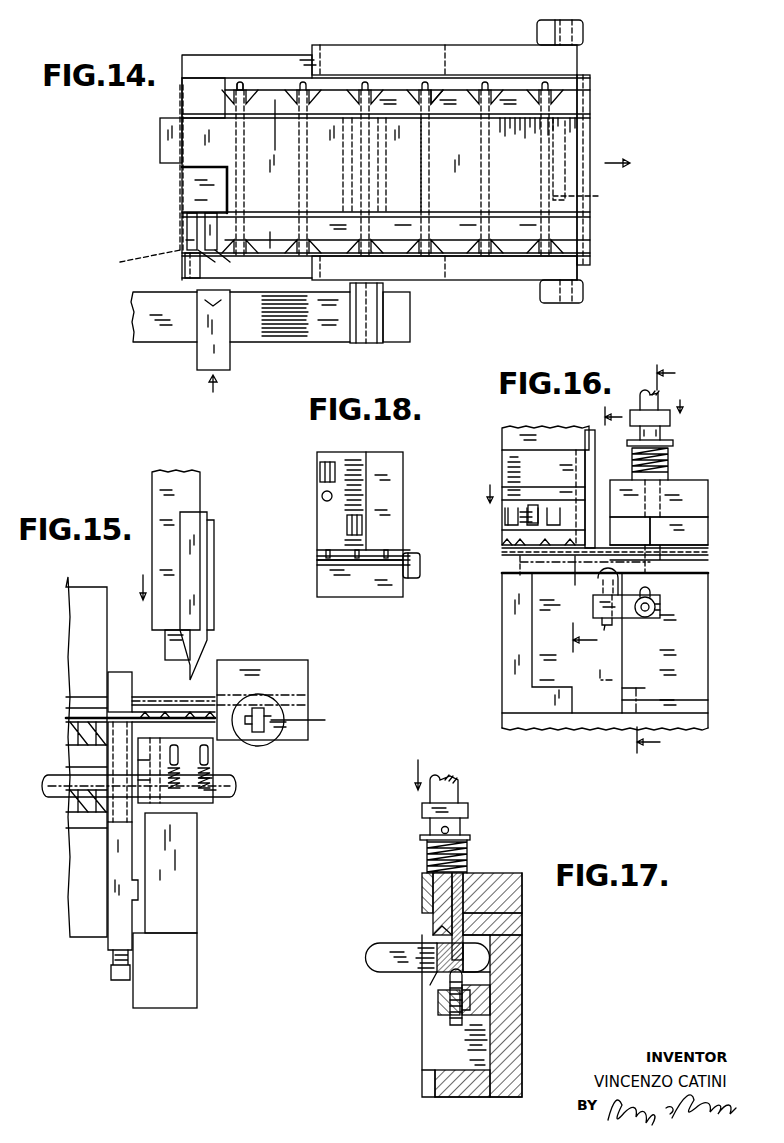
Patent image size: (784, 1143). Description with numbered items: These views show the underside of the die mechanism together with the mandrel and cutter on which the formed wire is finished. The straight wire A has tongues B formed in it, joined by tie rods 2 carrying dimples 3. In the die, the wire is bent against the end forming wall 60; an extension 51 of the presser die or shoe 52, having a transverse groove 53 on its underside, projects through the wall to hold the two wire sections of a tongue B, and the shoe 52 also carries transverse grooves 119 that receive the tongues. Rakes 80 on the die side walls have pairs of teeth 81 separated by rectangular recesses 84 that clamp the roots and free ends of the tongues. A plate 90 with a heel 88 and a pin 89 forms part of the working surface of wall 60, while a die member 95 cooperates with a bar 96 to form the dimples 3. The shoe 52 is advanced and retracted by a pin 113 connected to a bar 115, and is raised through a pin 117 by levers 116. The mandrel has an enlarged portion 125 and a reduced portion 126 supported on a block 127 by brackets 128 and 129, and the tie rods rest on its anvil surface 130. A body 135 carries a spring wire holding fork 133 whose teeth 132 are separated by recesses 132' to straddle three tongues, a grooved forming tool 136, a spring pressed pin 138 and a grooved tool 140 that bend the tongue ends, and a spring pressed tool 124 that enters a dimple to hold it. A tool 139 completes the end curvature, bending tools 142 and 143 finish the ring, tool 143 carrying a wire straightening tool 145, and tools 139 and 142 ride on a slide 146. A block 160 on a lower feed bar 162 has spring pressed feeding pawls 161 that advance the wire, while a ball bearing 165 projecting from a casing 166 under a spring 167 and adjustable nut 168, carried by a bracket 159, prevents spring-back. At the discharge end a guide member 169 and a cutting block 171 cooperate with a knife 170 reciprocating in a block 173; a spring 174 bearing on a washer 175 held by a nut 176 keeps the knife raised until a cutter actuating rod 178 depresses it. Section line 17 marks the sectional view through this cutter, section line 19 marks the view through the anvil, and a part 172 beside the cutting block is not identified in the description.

In FIG. 14, the tie-rods 2 is at (512, 260).
In FIG. 14, the dimples 3 is at (276, 260).
In FIG. 15, the dimples 3 is at (130, 712).
In FIG. 16, the section line 17— 17 is at (657, 559).
In FIG. 16, the section line 19— 19 is at (586, 529).
In FIG. 14, the extension of presser die 51 is at (162, 164).
In FIG. 14, the presser die or shoe 52 is at (276, 183).
In FIG. 14, the transverse groove 53 is at (170, 143).
In FIG. 14, the end forming wall 60 is at (196, 191).
In FIG. 14, the rakes 80 is at (271, 174).
In FIG. 14, the teeth 81 is at (470, 104).
In FIG. 14, the recess 84 is at (243, 92).
In FIG. 14, the heel portion 88 is at (186, 216).
In FIG. 14, the pin 89 is at (183, 243).
In FIG. 14, the plate 90 is at (182, 267).
In FIG. 14, the die member 95 is at (218, 262).
In FIG. 14, the bar 96 is at (198, 361).
In FIG. 14, the pin 113 is at (366, 343).
In FIG. 14, the bar 115 is at (136, 321).
In FIG. 14, the levers 116 is at (490, 45).
In FIG. 14, the pin 117 is at (372, 60).
In FIG. 14, the transverse grooves 119 is at (486, 174).
In FIG. 18, the spring pressed tool 124 is at (410, 554).
In FIG. 16, the spring pressed tool 124 is at (590, 459).
In FIG. 16, the enlarged portion of mandrel 125 is at (502, 578).
In FIG. 17, the enlarged portion of mandrel 125 is at (370, 955).
In FIG. 15, the enlarged portion of mandrel 125 is at (110, 757).
In FIG. 16, the reduced portion of mandrel 126 is at (555, 576).
In FIG. 15, the reduced portion of mandrel 126 is at (162, 697).
In FIG. 16, the block 127 is at (505, 720).
In FIG. 16, the bracket 128 is at (505, 645).
In FIG. 16, the bracket 129 is at (708, 661).
In FIG. 17, the bracket 129 is at (522, 995).
In FIG. 16, the anvil surface 130 is at (540, 562).
In FIG. 18, the teeth 132 is at (345, 563).
In FIG. 16, the teeth 132 is at (581, 565).
In FIG. 18, the recesses 132' is at (389, 570).
In FIG. 16, the recesses 132' is at (564, 503).
In FIG. 18, the spring wire holding fork 133 is at (367, 572).
In FIG. 16, the spring wire holding fork 133 is at (522, 568).
In FIG. 18, the body 135 is at (307, 548).
In FIG. 16, the body 135 is at (493, 466).
In FIG. 18, the grooved forming tool 136 is at (320, 474).
In FIG. 16, the grooved forming tool 136 is at (502, 538).
In FIG. 18, the spring pressed pin 138 is at (322, 496).
In FIG. 16, the spring pressed pin 138 is at (502, 525).
In FIG. 15, the tool 139 is at (113, 850).
In FIG. 18, the grooved tool 140 is at (360, 528).
In FIG. 16, the grooved tool 140 is at (540, 505).
In FIG. 15, the bending tool 142 is at (197, 901).
In FIG. 15, the bending tool 143 is at (165, 645).
In FIG. 15, the wire straightening tool 145 is at (202, 611).
In FIG. 15, the slide 146 is at (197, 971).
In FIG. 16, the bracket 159 is at (630, 612).
In FIG. 17, the bracket 159 is at (490, 1010).
In FIG. 15, the block 160 is at (212, 803).
In FIG. 15, the feeding pawls 161 is at (175, 740).
In FIG. 15, the lower feed bar 162 is at (232, 790).
In FIG. 17, the ball bearing 165 is at (440, 998).
In FIG. 16, the casing 166 is at (600, 598).
In FIG. 17, the casing 166 is at (450, 1008).
In FIG. 17, the spring 167 is at (478, 982).
In FIG. 16, the adjustable nut 168 is at (604, 630).
In FIG. 17, the adjustable nut 168 is at (456, 1025).
In FIG. 16, the guide member 169 is at (655, 573).
In FIG. 17, the guide member 169 is at (432, 982).
In FIG. 16, the knife 170 is at (655, 532).
In FIG. 17, the knife 170 is at (433, 925).
In FIG. 16, the cutting block 171 is at (708, 560).
In FIG. 16, the block 172 is at (708, 535).
In FIG. 16, the block 173 is at (708, 503).
In FIG. 17, the block 173 is at (423, 893).
In FIG. 15, the block 173 is at (265, 660).
In FIG. 16, the spring 174 is at (670, 462).
In FIG. 17, the spring 174 is at (428, 857).
In FIG. 16, the washer 175 is at (675, 446).
In FIG. 17, the washer 175 is at (425, 836).
In FIG. 15, the washer 175 is at (275, 733).
In FIG. 16, the nut 176 is at (665, 434).
In FIG. 17, the nut 176 is at (450, 827).
In FIG. 15, the nut 176 is at (313, 720).
In FIG. 16, the cutter actuating rod 178 is at (660, 398).
In FIG. 14, the wire A is at (143, 260).
In FIG. 14, the tongues B is at (308, 160).
In FIG. 16, the tongues B is at (665, 553).